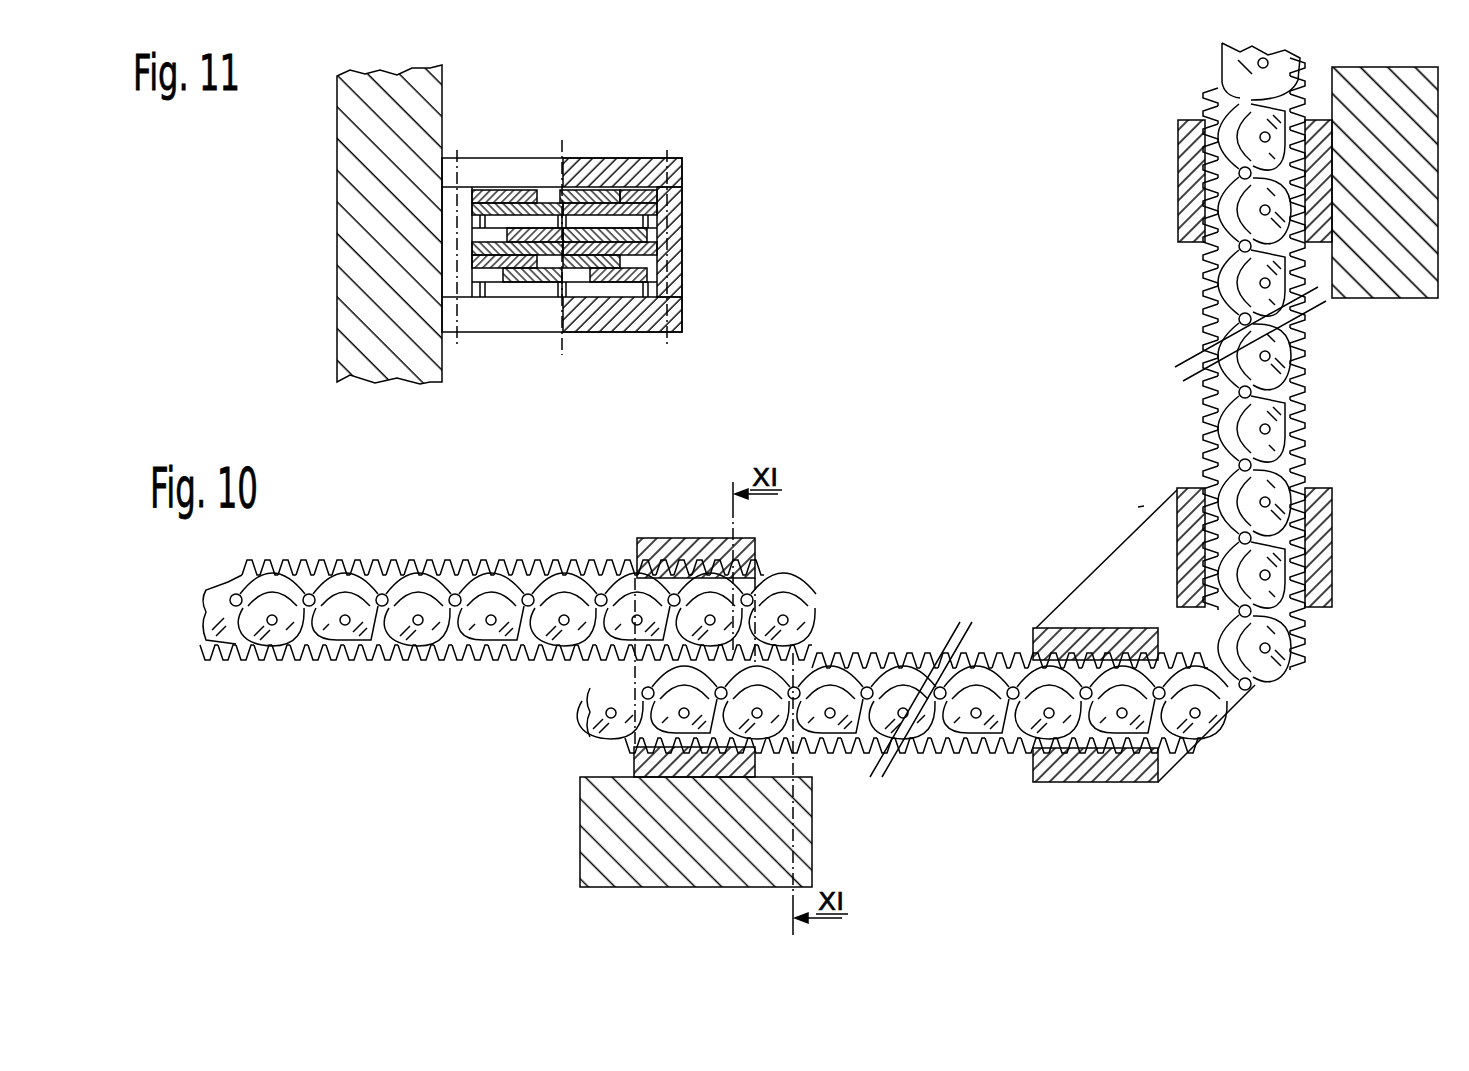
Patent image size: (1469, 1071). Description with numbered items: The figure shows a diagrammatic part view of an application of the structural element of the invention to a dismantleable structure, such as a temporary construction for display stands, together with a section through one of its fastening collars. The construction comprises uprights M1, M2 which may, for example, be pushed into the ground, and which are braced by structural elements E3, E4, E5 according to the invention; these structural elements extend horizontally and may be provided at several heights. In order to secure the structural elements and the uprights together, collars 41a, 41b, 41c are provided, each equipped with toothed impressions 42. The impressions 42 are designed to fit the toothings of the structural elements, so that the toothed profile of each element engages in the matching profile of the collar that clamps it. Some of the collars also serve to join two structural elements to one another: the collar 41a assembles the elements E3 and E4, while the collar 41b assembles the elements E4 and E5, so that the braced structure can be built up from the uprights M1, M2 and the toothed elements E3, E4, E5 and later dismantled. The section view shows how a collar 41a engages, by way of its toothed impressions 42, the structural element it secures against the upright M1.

In FIG. 11, the upright M1 is at (348, 250).
In FIG. 10, the upright M1 is at (800, 853).
In FIG. 10, the upright M2 is at (1392, 300).
In FIG. 11, the collar 41a is at (698, 329).
In FIG. 10, the collar 41a is at (676, 530).
In FIG. 10, the collar 41b is at (1348, 568).
In FIG. 10, the collar 41c is at (1171, 247).
In FIG. 10, the toothed impressions 42 is at (760, 578).
In FIG. 10, the structural element E3 is at (478, 550).
In FIG. 10, the structural element E4 is at (905, 632).
In FIG. 10, the structural element E5 is at (1186, 428).